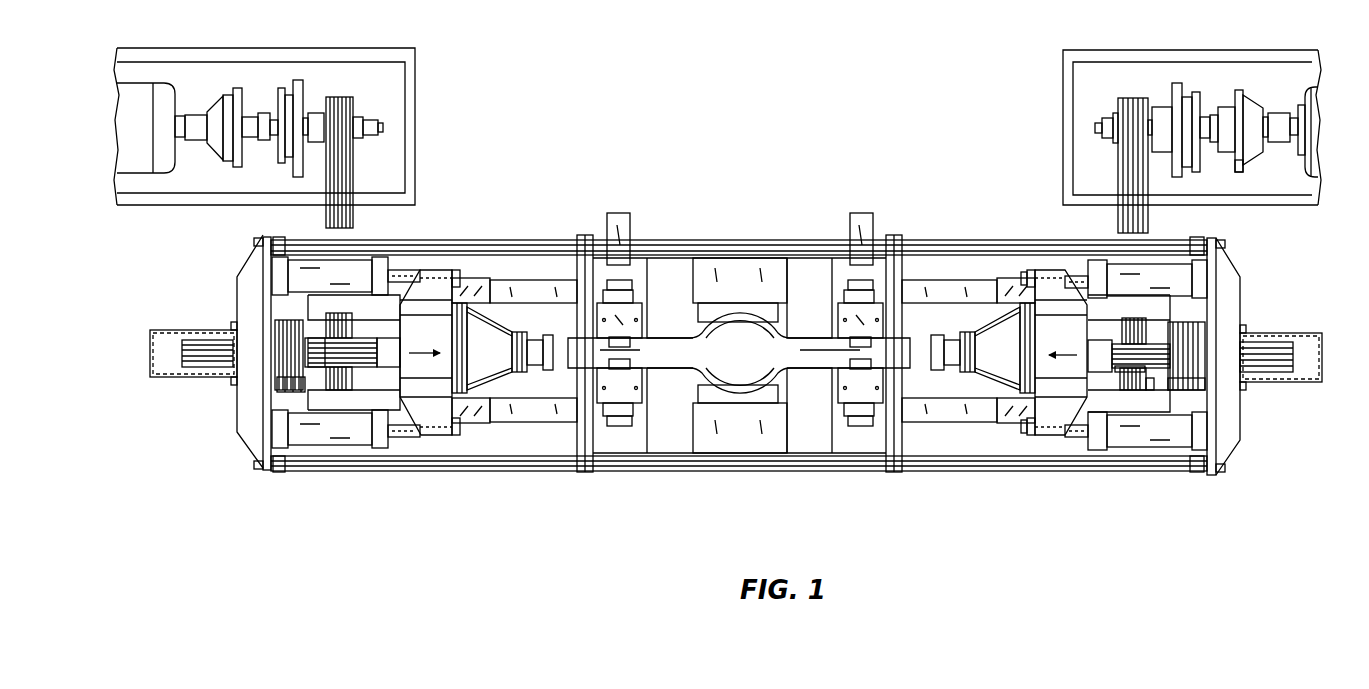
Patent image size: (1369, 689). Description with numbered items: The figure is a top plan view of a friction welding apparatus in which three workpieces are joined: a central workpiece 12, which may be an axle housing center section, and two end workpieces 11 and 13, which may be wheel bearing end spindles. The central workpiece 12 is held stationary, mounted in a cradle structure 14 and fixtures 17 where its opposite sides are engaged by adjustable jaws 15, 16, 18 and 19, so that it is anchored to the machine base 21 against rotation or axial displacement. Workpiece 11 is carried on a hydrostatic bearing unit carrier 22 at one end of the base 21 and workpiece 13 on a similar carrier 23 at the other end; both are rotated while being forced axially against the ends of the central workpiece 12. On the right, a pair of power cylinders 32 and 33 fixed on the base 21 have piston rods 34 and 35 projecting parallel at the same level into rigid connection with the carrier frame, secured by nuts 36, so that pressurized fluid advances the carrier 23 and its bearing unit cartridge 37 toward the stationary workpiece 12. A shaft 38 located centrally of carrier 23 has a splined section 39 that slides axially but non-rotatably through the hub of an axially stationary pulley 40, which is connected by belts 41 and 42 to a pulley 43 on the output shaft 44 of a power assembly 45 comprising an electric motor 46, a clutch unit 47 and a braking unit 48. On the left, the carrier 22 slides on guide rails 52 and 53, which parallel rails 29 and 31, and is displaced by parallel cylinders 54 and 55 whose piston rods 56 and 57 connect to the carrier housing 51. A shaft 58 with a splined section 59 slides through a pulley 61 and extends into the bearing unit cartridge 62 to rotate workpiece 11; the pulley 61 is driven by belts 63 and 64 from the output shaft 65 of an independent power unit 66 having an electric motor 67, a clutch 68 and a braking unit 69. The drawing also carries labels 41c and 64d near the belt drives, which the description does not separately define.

The workpiece 11 is at (537, 344).
The central workpiece 12 is at (732, 361).
The workpiece 13 is at (948, 344).
The cradle structure 14 is at (702, 270).
The adjustable jaw 15 is at (781, 317).
The adjustable jaw 16 is at (781, 392).
The fixtures 17 is at (618, 400).
The adjustable jaw 18 is at (622, 336).
The adjustable jaw 19 is at (625, 374).
The machine base 21 is at (820, 465).
The hydrostatic bearing unit carrier 22 is at (440, 291).
The hydrostatic bearing unit carrier 23 is at (1046, 286).
The rail 29 is at (984, 292).
The rail 31 is at (958, 419).
The power cylinder 32 is at (1178, 282).
The power cylinder 33 is at (1155, 448).
The piston rod 34 is at (1078, 276).
The piston rod 35 is at (1080, 440).
The nuts 36 is at (1024, 274).
The bearing unit cartridge 37 is at (996, 364).
The shaft 38 is at (1117, 373).
The splined section 39 is at (1153, 345).
The pulley 40 is at (1170, 332).
The belt 41 is at (1196, 387).
The bearing retainer 41c is at (1150, 388).
The belt 42 is at (1142, 313).
The pulley 43 is at (1152, 99).
The output shaft 44 is at (1095, 127).
The power assembly 45 is at (1249, 96).
The electric motor 46 is at (1309, 134).
The clutch unit 47 is at (1240, 165).
The braking unit 48 is at (1180, 100).
The carrier housing 51 is at (433, 420).
The guide rail 52 is at (558, 292).
The guide rail 53 is at (523, 416).
The cylinder 54 is at (360, 272).
The cylinder 55 is at (332, 440).
The piston rod 56 is at (402, 276).
The piston rod 57 is at (402, 437).
The shaft 58 is at (358, 337).
The splined section 59 is at (320, 362).
The pulley 61 is at (278, 383).
The bearing unit cartridge 62 is at (493, 346).
The belt 63 is at (285, 331).
The belt 64 is at (328, 221).
The drive pinion gear 64d is at (338, 100).
The output shaft 65 is at (374, 123).
The independent power unit 66 is at (319, 85).
The electric motor 67 is at (140, 95).
The clutch 68 is at (233, 88).
The braking unit 69 is at (287, 88).